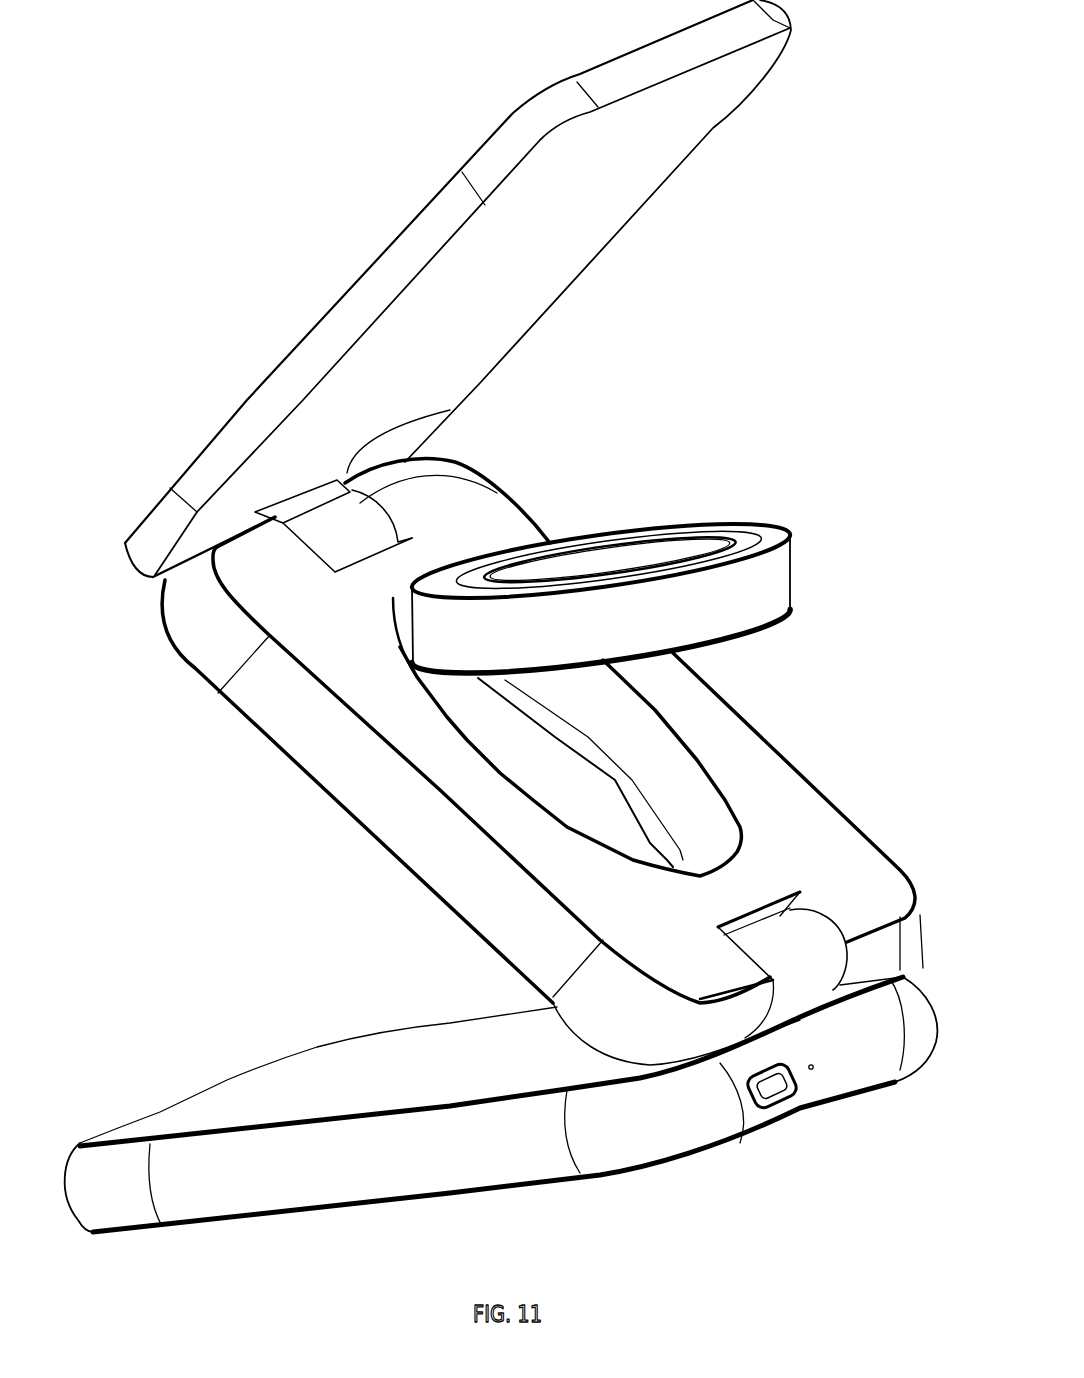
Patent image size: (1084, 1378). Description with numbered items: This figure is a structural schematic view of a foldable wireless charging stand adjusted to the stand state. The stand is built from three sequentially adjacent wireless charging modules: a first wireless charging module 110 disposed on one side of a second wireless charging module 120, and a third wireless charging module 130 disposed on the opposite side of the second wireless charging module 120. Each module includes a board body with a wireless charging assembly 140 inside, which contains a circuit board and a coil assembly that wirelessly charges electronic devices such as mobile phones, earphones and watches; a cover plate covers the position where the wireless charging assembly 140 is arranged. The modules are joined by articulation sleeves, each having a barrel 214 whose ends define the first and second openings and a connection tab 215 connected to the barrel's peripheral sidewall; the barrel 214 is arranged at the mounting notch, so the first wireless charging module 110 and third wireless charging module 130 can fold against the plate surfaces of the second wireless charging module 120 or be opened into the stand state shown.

The first wireless charging module 110 is at (357, 1063).
The second wireless charging module 120 is at (812, 802).
The third wireless charging module 130 is at (585, 210).
The wireless charging assembly 140 is at (660, 553).
The barrel 214 is at (365, 530).
The connection tab 215 is at (343, 485).